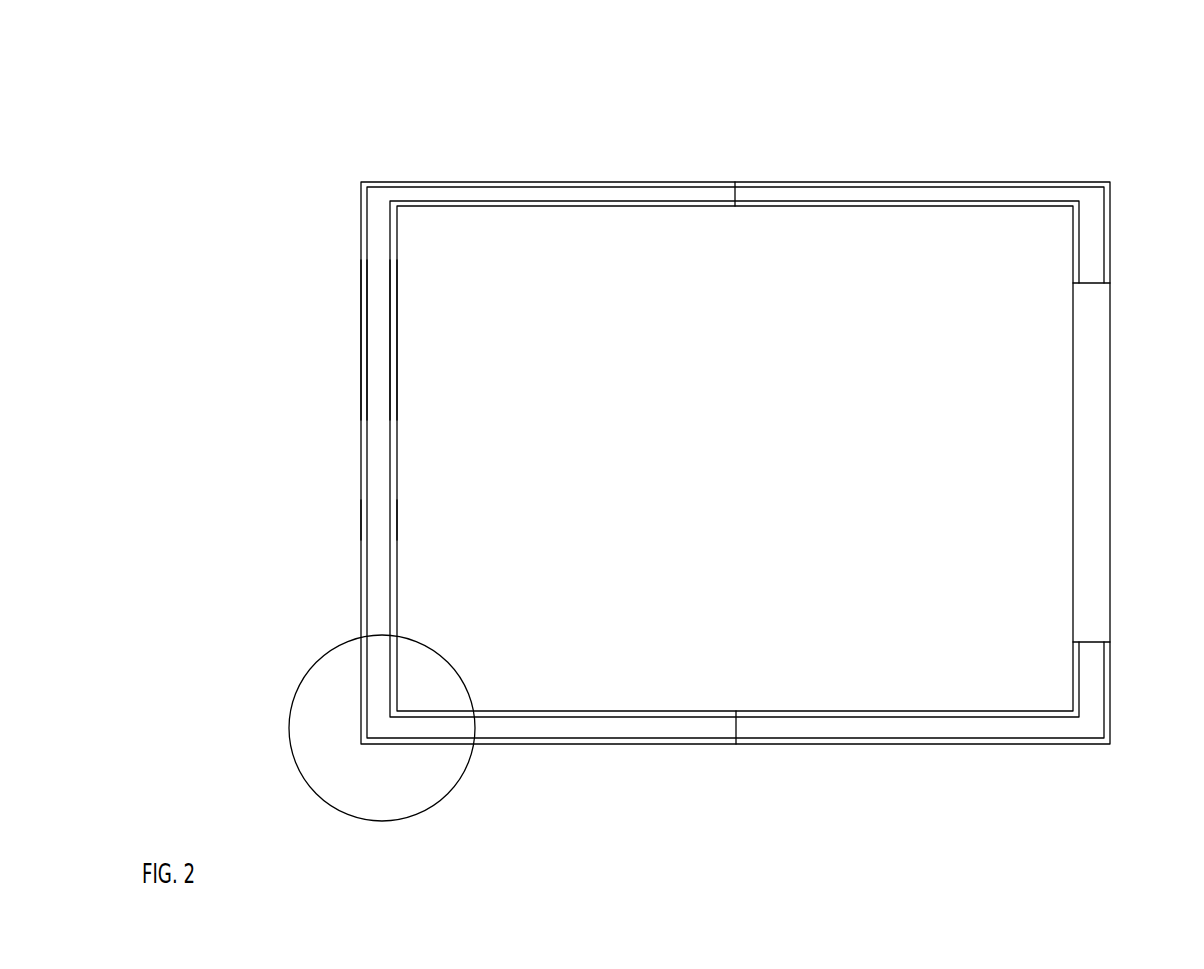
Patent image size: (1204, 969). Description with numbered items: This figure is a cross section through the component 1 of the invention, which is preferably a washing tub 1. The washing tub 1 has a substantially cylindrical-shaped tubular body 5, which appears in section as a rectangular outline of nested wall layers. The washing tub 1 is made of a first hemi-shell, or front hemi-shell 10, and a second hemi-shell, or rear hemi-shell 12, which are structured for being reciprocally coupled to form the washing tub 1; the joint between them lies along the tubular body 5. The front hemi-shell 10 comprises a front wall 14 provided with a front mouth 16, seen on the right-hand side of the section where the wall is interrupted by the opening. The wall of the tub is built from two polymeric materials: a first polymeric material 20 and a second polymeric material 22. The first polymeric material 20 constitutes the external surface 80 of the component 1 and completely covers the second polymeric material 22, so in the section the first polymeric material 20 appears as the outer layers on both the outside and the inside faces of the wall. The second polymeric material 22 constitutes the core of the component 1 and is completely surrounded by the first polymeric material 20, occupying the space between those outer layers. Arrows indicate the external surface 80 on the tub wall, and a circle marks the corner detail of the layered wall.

The component 1 is at (258, 146).
The tubular body 5 is at (703, 197).
The front hemi-shell 10 is at (866, 128).
The rear hemi-shell 12 is at (542, 138).
The front wall 14 is at (1093, 238).
The front mouth 16 is at (1093, 428).
The first polymeric material 20 is at (363, 342).
The second polymeric material 22 is at (378, 383).
The external surface 80 is at (345, 514).